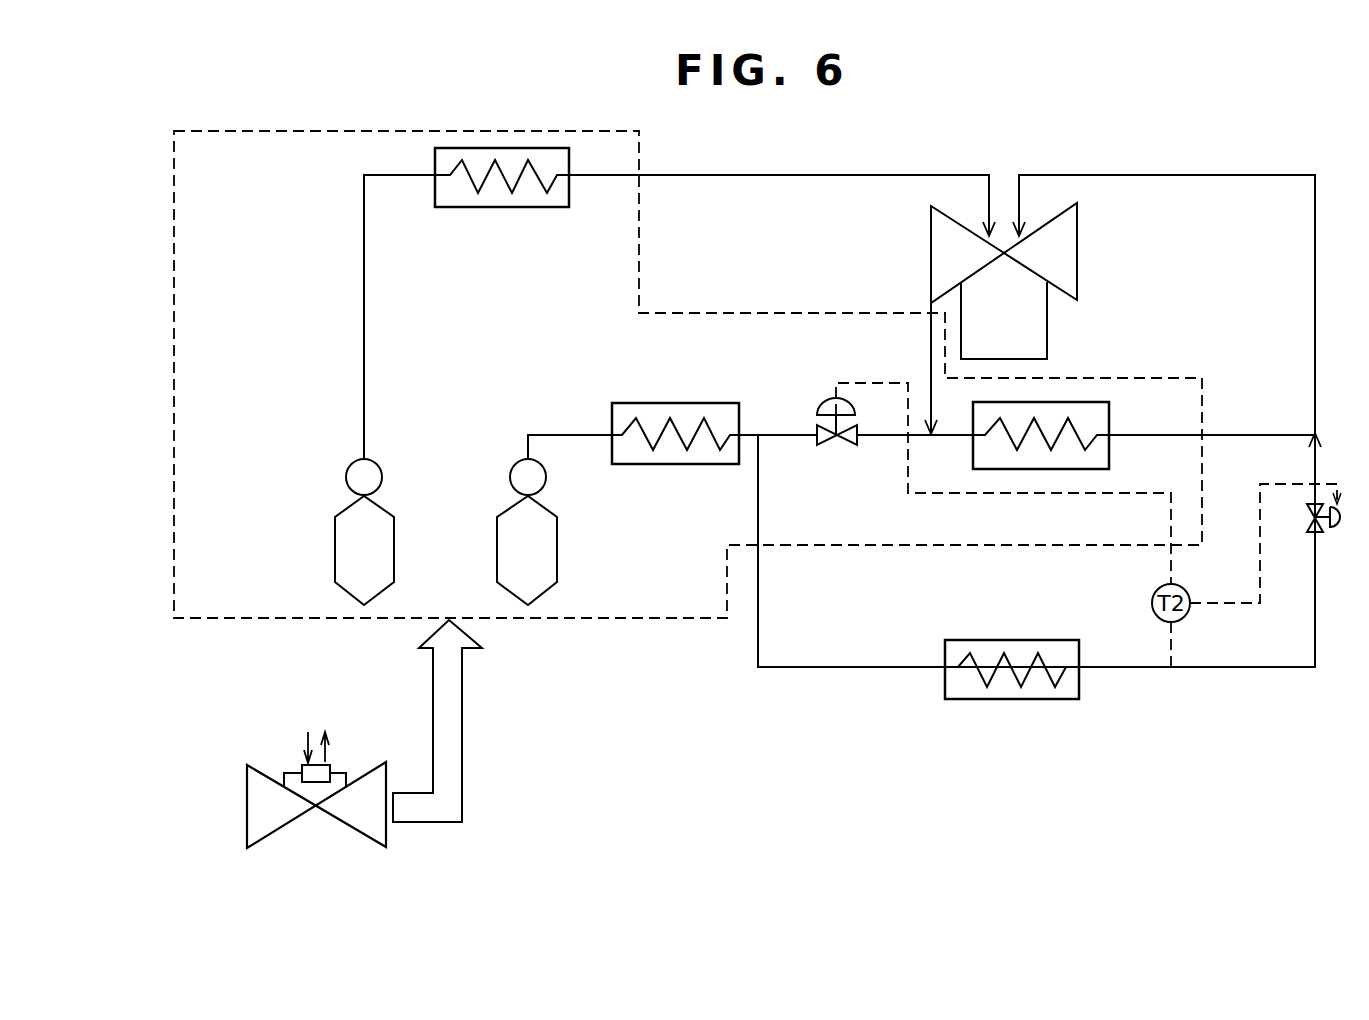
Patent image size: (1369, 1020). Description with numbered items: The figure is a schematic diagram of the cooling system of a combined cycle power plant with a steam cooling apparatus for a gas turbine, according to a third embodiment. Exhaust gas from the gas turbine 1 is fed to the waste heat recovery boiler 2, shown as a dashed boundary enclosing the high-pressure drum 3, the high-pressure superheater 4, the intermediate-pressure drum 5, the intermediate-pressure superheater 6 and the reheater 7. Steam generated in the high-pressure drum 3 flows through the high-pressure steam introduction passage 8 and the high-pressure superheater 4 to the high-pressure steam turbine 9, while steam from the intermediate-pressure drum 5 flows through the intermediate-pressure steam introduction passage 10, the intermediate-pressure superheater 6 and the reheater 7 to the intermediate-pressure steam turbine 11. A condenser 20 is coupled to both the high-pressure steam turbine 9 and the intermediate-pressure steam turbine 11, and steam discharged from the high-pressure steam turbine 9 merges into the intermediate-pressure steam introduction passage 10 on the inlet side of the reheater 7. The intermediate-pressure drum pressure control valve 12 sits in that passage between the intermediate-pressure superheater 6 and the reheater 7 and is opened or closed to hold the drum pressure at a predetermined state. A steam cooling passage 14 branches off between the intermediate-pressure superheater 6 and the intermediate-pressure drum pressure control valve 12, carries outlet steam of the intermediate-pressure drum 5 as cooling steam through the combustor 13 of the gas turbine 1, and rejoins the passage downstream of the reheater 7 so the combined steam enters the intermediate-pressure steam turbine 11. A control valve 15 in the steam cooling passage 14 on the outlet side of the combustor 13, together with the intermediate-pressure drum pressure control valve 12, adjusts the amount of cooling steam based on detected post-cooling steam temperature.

The gas turbine 1 is at (322, 828).
The waste heat recovery boiler 2 is at (694, 618).
The high-pressure drum 3 is at (336, 473).
The high-pressure superheater 4 is at (557, 207).
The intermediate-pressure drum 5 is at (503, 497).
The intermediate-pressure superheater 6 is at (660, 464).
The reheater 7 is at (1109, 417).
The high-pressure steam introduction passage 8 is at (390, 176).
The high-pressure steam turbine 9 is at (953, 208).
The intermediate-pressure steam introduction passage 10 is at (805, 437).
The intermediate-pressure steam turbine 11 is at (1081, 243).
The intermediate-pressure drum pressure control valve 12 is at (857, 403).
The combustor 13 is at (1080, 681).
The steam cooling passage 14 is at (305, 746).
The control valve 15 is at (1312, 525).
The condenser 20 is at (1047, 345).